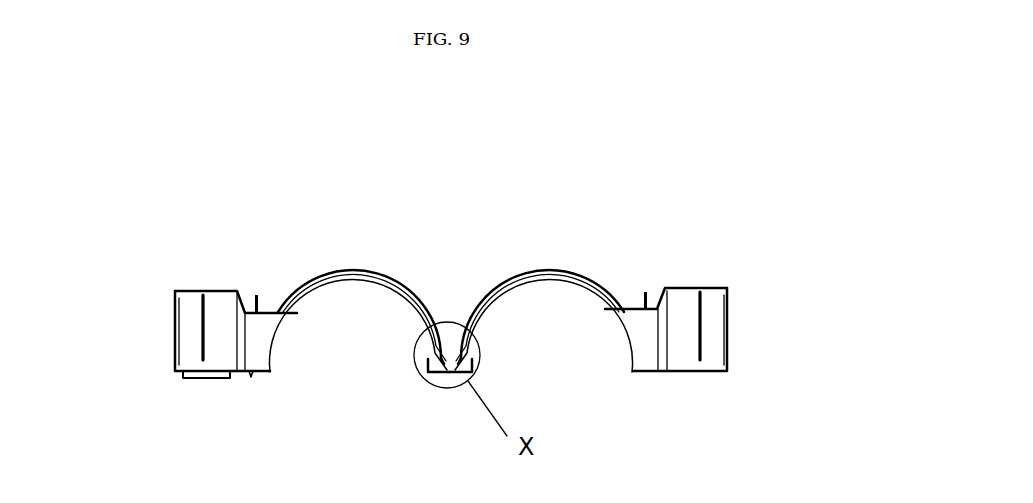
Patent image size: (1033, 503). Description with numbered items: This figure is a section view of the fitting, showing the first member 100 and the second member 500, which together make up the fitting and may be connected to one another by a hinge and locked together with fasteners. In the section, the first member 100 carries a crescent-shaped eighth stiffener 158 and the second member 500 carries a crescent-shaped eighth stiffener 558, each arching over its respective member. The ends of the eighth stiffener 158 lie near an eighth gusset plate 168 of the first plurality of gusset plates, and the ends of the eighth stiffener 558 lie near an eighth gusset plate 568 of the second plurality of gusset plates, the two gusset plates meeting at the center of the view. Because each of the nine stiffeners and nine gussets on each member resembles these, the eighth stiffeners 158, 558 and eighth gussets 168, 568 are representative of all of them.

The first member 100 is at (152, 332).
The second member 500 is at (735, 318).
The eighth stiffener 158 is at (347, 283).
The eighth stiffener 558 is at (553, 280).
The eighth gusset plate 168 is at (438, 361).
The eighth gusset plate 568 is at (468, 358).